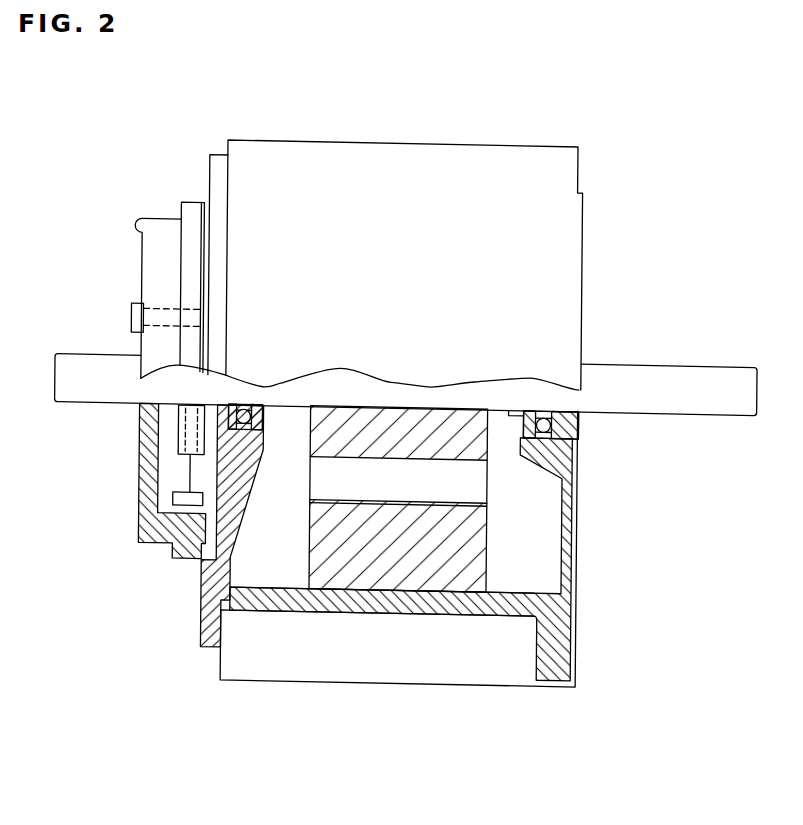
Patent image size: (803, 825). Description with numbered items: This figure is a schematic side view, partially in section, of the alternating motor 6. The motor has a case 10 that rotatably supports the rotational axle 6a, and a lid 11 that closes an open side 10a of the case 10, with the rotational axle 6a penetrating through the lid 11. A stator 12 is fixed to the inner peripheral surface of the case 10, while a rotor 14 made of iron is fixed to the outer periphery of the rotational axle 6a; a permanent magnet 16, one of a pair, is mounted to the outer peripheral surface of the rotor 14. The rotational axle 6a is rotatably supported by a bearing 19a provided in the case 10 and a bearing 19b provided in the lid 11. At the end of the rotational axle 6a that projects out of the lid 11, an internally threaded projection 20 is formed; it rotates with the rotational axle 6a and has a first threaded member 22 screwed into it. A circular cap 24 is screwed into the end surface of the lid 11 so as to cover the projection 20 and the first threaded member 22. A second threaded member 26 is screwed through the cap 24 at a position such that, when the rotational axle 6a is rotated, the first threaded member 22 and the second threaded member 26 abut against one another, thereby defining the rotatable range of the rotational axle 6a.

The alternating motor 6 is at (314, 122).
The rotational axle 6a is at (700, 374).
The case 10 is at (568, 210).
The open side 10a is at (251, 565).
The lid 11 is at (209, 621).
The stator 12 is at (478, 550).
The rotor 14 is at (470, 408).
The permanent magnet 16 is at (473, 483).
The bearing 19a is at (553, 420).
The bearing 19b is at (238, 552).
The internally threaded projection 20 is at (183, 431).
The first threaded member 22 is at (191, 473).
The circular cap 24 is at (158, 257).
The second threaded member 26 is at (134, 315).